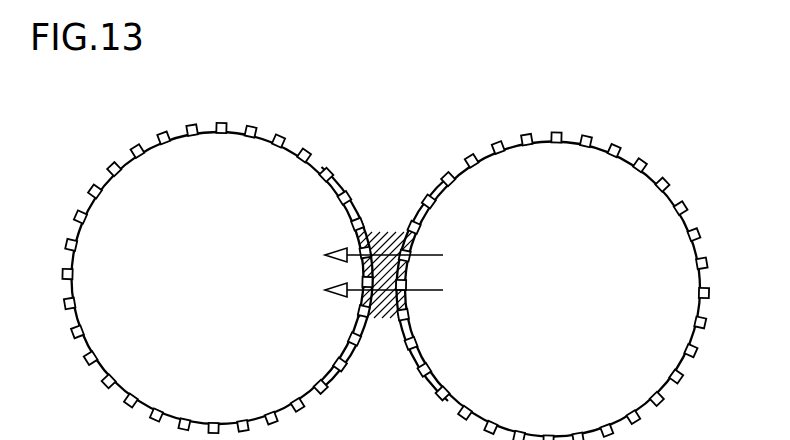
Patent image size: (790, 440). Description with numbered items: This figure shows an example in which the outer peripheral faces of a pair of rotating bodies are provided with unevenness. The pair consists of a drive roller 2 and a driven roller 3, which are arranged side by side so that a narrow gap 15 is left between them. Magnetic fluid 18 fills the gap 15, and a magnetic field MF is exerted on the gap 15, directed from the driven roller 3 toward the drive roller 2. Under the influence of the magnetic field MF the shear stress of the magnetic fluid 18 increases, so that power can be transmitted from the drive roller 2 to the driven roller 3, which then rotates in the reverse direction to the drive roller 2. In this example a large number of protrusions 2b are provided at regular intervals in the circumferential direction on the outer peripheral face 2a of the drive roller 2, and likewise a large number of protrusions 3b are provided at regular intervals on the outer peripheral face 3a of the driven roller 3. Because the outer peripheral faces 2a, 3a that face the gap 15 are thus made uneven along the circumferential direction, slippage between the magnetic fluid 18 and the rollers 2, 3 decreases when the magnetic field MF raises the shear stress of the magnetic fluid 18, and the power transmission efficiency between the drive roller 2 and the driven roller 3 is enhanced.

The drive roller 2 is at (235, 150).
The outer peripheral face of the drive roller 2a is at (354, 212).
The protrusions 2b is at (160, 128).
The driven roller 3 is at (593, 163).
The outer peripheral face of the driven roller 3a is at (462, 168).
The protrusions 3b is at (557, 130).
The gap 15 is at (386, 293).
The magnetic fluid 18 is at (389, 237).
The magnetic field MF is at (411, 272).